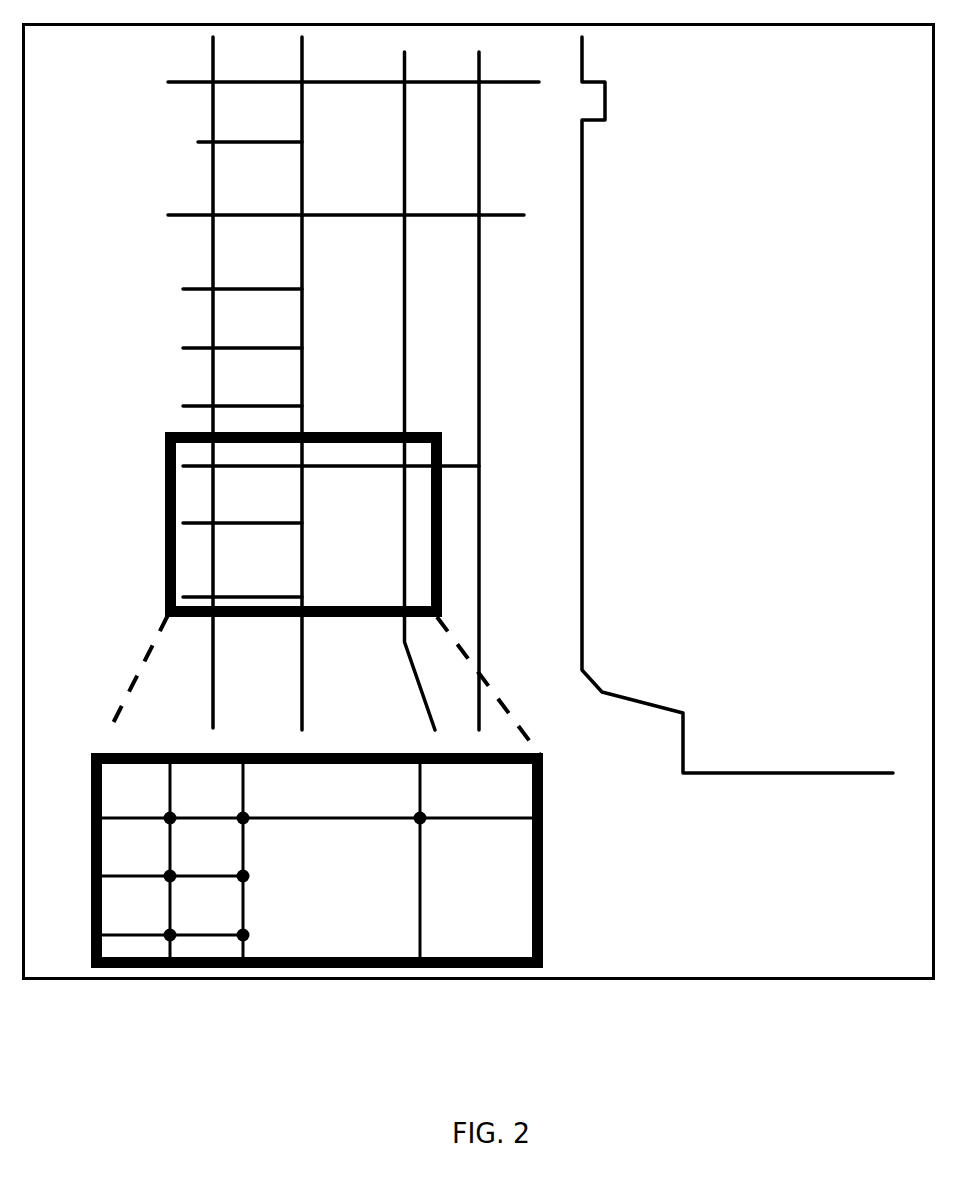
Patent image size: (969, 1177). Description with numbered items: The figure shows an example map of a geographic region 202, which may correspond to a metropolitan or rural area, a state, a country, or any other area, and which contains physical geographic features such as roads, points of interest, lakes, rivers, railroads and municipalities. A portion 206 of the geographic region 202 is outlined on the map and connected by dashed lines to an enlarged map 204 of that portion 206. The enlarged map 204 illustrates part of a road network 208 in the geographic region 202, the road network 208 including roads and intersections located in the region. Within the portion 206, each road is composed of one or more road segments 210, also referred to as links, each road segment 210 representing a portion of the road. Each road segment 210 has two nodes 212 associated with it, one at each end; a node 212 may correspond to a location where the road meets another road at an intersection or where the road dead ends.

The geographic region 202 is at (805, 86).
The enlarged map 204 is at (543, 785).
The portion 206 is at (518, 939).
The road network 208 is at (283, 902).
The road segment 210 is at (420, 875).
The node 212 is at (413, 813).